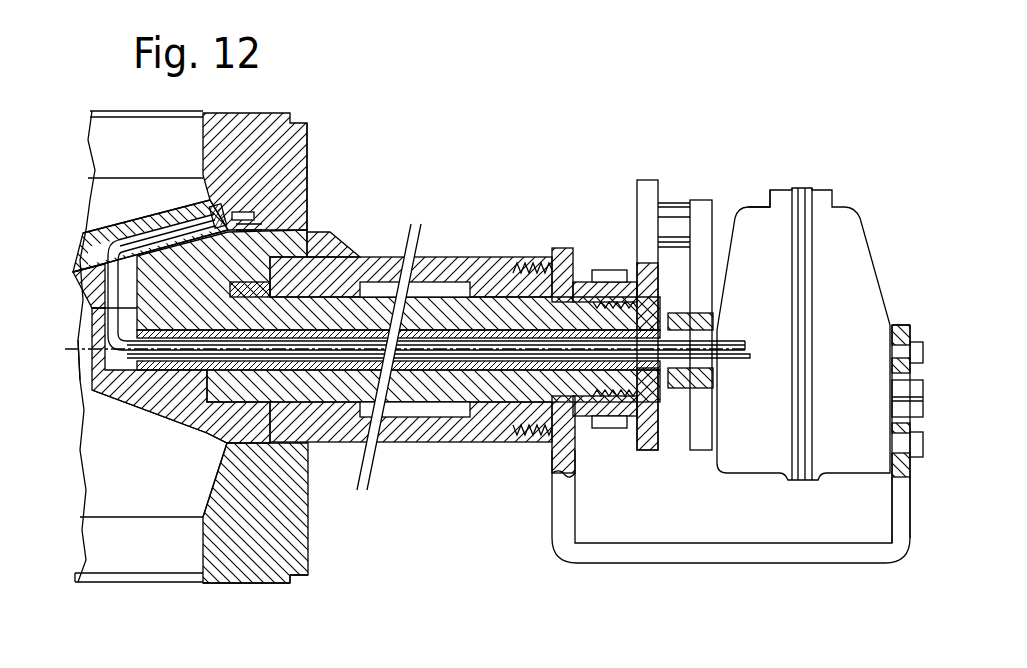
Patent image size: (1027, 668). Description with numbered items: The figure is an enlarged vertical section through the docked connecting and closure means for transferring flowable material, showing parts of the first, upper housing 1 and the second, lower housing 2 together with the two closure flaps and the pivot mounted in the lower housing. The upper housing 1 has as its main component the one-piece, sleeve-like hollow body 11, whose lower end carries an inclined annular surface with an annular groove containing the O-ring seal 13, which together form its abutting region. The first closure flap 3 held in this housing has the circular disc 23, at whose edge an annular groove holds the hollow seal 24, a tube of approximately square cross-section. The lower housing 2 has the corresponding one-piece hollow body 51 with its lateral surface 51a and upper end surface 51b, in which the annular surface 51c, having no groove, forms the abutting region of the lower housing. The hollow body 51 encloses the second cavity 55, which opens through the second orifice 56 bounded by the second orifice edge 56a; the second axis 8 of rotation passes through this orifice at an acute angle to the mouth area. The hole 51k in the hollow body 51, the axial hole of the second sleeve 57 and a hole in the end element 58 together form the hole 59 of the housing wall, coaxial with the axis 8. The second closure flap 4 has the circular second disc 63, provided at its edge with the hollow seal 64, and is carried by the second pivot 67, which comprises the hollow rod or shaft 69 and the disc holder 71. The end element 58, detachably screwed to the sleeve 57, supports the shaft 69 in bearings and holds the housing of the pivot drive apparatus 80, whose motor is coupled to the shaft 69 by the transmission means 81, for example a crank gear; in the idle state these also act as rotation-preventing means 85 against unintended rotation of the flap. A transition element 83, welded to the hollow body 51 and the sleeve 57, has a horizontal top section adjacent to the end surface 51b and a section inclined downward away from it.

The first upper housing 1 is at (276, 108).
The second lower housing 2 is at (292, 588).
The first closure flap 3 is at (80, 230).
The second closure flap 4 is at (86, 312).
The second axis of rotation 8 is at (790, 351).
The first hollow body 11 is at (310, 130).
The seal 13 is at (255, 205).
The disc 23 is at (107, 236).
The hollow seal 24 is at (212, 215).
The second hollow body 51 is at (235, 578).
The lateral surface 51a is at (310, 535).
The upper end surface 51b is at (300, 222).
The annular surface 51c is at (262, 232).
The hole 51k is at (226, 435).
The second cavity 55 is at (125, 548).
The second orifice 56 is at (80, 262).
The second orifice edge 56a is at (258, 212).
The second sleeve 57 is at (452, 257).
The end element 58 is at (552, 520).
The hole 59 is at (413, 417).
The second disc 63 is at (82, 372).
The hollow seal 64 is at (250, 245).
The second pivot 67 is at (99, 404).
The hollow rod or hollow shaft 69 is at (497, 262).
The disc holder 71 is at (143, 410).
The pivot drive apparatus 80 is at (833, 217).
The transmission means 81 is at (652, 193).
The transition element 83 is at (346, 238).
The rotation-preventing means 85 is at (757, 200).